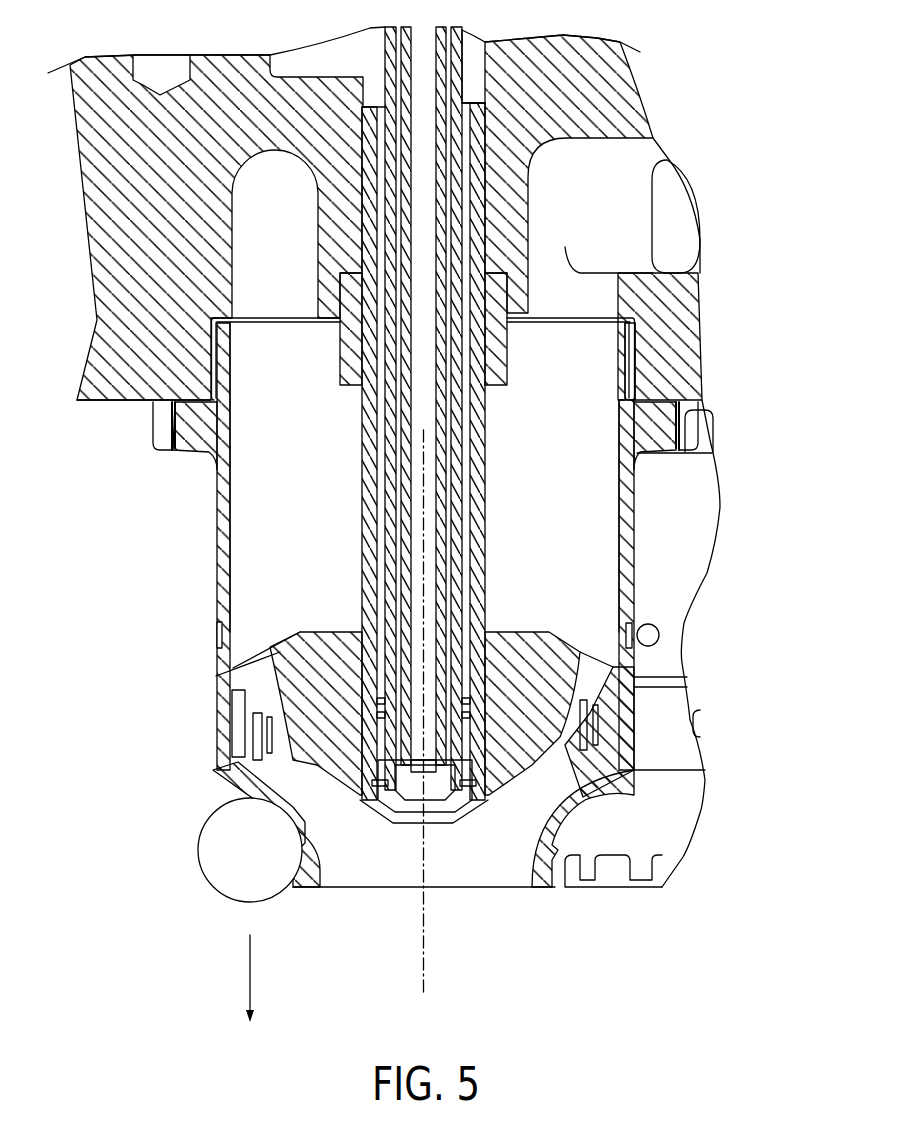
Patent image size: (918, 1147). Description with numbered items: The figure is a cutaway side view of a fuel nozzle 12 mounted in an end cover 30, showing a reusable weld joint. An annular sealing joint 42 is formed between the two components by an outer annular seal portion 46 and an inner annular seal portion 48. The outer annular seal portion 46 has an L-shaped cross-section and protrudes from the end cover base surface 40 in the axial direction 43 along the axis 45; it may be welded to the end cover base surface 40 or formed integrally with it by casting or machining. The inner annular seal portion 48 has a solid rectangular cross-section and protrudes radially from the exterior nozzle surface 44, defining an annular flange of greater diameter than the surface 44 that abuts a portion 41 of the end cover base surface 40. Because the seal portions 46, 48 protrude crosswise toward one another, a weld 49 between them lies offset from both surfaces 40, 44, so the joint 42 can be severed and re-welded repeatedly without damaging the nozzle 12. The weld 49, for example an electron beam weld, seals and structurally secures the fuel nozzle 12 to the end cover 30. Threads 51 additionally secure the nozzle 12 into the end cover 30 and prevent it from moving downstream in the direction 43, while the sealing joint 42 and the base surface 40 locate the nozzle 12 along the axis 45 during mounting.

The fuel nozzle 12 is at (558, 913).
The end cover 30 is at (598, 100).
The end cover base surface 40 is at (113, 403).
The portion of surface 41 is at (187, 400).
The annular sealing joint 42 is at (95, 442).
The axial direction 43 is at (248, 975).
The exterior nozzle surface 44 is at (223, 607).
The axis 45 is at (422, 937).
The outer annular seal portion 46 is at (168, 422).
The inner annular seal portion 48 is at (195, 449).
The weld 49 is at (173, 453).
The threads 51 is at (633, 360).